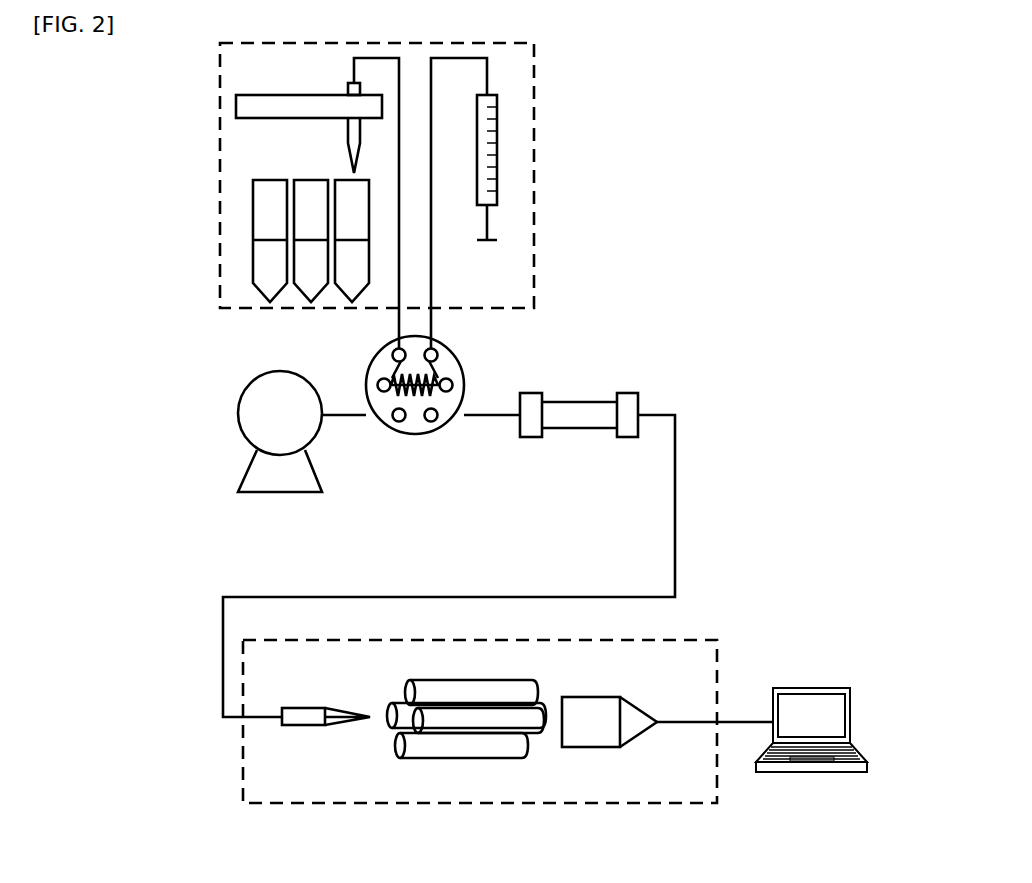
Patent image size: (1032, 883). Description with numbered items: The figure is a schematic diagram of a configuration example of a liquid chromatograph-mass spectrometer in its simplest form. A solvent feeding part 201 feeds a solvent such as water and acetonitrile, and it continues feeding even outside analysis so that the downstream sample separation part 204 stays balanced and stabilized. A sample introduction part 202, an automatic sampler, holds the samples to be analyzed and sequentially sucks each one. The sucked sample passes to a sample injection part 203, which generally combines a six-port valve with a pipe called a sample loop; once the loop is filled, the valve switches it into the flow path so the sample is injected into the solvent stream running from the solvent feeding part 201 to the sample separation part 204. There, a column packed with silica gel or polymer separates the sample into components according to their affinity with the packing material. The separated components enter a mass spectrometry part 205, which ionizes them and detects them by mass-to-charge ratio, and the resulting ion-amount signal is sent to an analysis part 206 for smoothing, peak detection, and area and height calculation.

The solvent feeding part 201 is at (238, 400).
The sample introduction part 202 is at (535, 88).
The sample injection part 203 is at (465, 358).
The sample separation part 204 is at (625, 390).
The mass spectrometry part 205 is at (693, 635).
The analysis part 206 is at (823, 688).